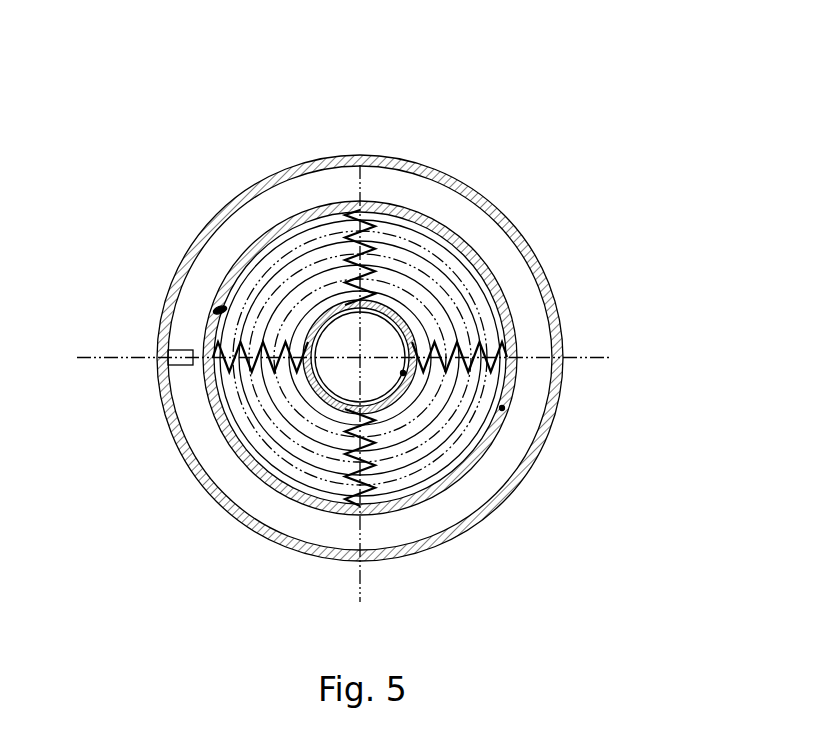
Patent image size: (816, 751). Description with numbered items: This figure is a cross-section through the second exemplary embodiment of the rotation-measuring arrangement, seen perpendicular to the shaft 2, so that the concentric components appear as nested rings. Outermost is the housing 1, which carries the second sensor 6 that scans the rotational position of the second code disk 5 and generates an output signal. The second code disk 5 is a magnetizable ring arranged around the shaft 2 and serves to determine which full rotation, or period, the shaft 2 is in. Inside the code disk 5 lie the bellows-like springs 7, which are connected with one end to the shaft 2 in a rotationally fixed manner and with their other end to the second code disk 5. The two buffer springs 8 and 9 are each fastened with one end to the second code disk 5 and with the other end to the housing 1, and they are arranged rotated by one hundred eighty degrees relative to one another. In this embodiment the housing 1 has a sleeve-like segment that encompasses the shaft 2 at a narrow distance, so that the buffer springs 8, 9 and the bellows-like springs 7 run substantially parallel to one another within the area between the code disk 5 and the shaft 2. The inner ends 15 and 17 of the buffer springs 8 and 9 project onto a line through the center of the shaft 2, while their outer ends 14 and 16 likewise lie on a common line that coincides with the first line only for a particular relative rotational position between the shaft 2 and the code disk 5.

The housing 1 is at (430, 167).
The shaft 2 is at (370, 377).
The second code disk 5 is at (385, 208).
The second sensor 6 is at (178, 350).
The bellows-like springs 7 is at (356, 224).
The buffer spring 8 is at (453, 252).
The buffer spring 9 is at (460, 284).
The outer end of buffer spring 14 is at (215, 308).
The inner end of buffer spring 15 is at (403, 374).
The outer end of buffer spring 16 is at (503, 410).
The inner end of buffer spring 17 is at (320, 296).